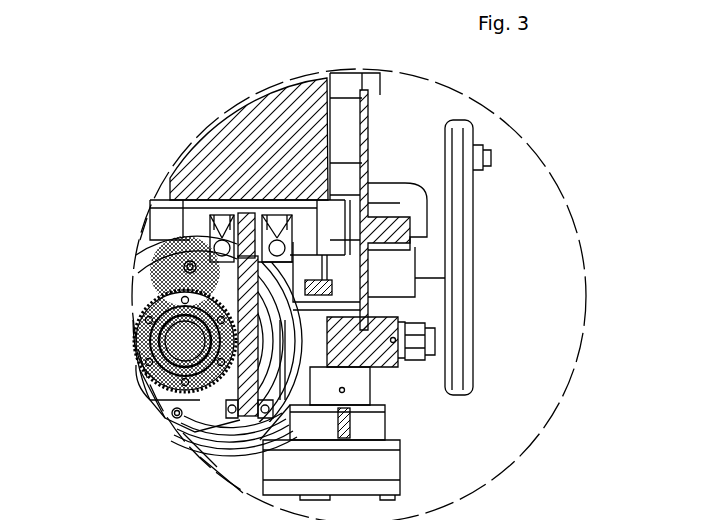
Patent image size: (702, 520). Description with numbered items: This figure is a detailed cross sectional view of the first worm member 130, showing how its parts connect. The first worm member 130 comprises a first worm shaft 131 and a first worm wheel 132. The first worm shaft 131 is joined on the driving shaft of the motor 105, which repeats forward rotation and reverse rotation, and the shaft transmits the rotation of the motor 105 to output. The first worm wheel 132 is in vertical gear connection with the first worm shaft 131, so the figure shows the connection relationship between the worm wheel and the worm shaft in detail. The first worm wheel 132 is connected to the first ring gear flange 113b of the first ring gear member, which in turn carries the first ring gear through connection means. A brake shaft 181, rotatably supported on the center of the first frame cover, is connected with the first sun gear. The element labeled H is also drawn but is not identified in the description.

The motor 105 is at (256, 108).
The handle H is at (465, 118).
The first worm member 130 is at (75, 273).
The first worm shaft 131 is at (177, 277).
The first worm wheel 132 is at (137, 340).
The brake shaft 181 is at (141, 367).
The first ring gear flange 113b is at (197, 416).